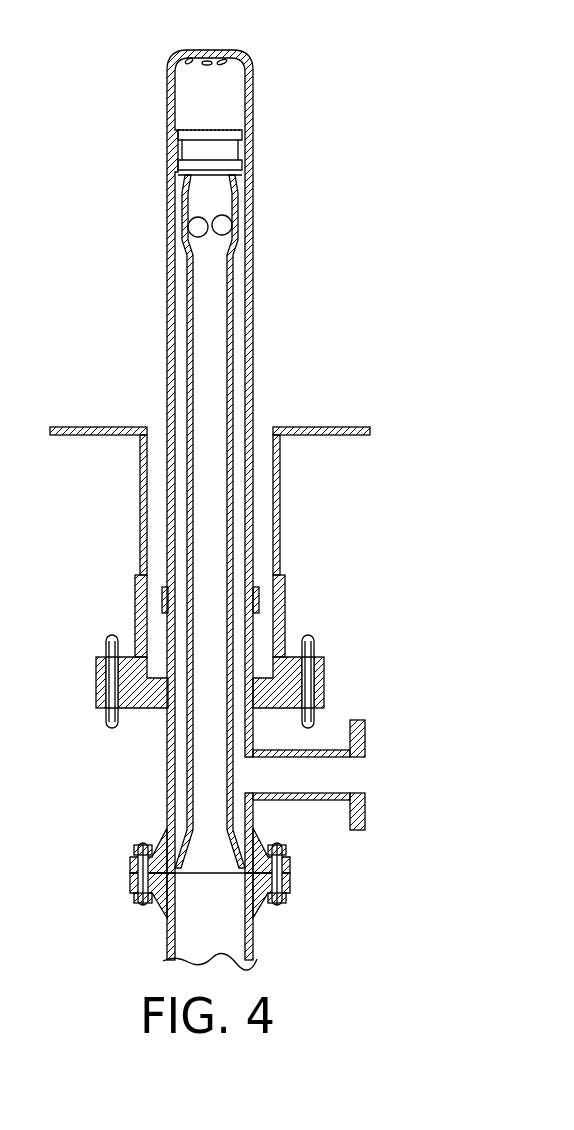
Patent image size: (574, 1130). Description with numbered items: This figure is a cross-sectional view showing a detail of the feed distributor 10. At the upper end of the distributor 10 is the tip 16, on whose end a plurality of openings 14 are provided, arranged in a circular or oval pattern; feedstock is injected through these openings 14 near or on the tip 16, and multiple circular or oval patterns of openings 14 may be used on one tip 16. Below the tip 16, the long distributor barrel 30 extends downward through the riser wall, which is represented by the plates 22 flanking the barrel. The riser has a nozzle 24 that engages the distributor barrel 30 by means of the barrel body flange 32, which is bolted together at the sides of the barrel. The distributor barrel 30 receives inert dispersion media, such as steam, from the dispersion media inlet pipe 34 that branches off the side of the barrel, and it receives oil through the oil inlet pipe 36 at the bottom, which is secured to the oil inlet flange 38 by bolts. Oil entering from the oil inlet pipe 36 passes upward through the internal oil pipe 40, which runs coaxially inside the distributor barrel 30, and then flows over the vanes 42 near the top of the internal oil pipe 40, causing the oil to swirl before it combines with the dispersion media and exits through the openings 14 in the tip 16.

The distributor 10 is at (297, 250).
The openings 14 is at (206, 61).
The tip 16 is at (253, 67).
The plates 22 is at (90, 427).
The nozzle 24 is at (135, 592).
The distributor barrel 30 is at (253, 316).
The barrel body flange 32 is at (324, 688).
The dispersion media inlet pipe 34 is at (315, 800).
The oil inlet pipe 36 is at (253, 945).
The oil inlet flange 38 is at (290, 870).
The internal oil pipe 40 is at (232, 626).
The vanes 42 is at (182, 223).